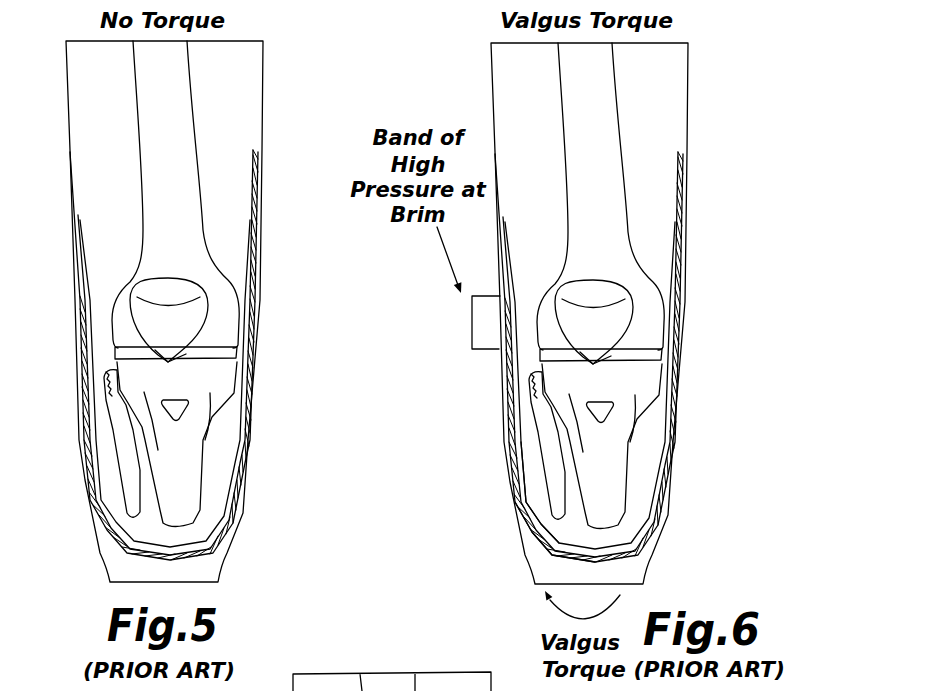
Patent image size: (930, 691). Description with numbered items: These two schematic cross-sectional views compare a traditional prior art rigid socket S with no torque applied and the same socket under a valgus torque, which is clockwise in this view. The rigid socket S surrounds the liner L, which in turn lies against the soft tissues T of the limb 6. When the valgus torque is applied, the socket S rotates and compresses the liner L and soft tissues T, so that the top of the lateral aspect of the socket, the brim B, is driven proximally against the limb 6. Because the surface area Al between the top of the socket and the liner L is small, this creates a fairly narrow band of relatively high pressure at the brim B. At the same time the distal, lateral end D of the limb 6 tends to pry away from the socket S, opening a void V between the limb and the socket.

In FIG. 5, the brim B is at (258, 298).
In FIG. 6, the brim B is at (618, 357).
In FIG. 5, the liner L is at (94, 438).
In FIG. 6, the liner L is at (617, 385).
In FIG. 5, the rigid socket S is at (242, 520).
In FIG. 6, the rigid socket S is at (604, 313).
In FIG. 5, the soft tissues T is at (210, 478).
In FIG. 6, the soft tissues T is at (632, 446).
In FIG. 5, the limb 6 is at (193, 432).
In FIG. 6, the limb 6 is at (676, 410).
In FIG. 6, the surface area Al is at (456, 322).
In FIG. 6, the distal, lateral end D is at (503, 495).
In FIG. 6, the void V is at (535, 542).